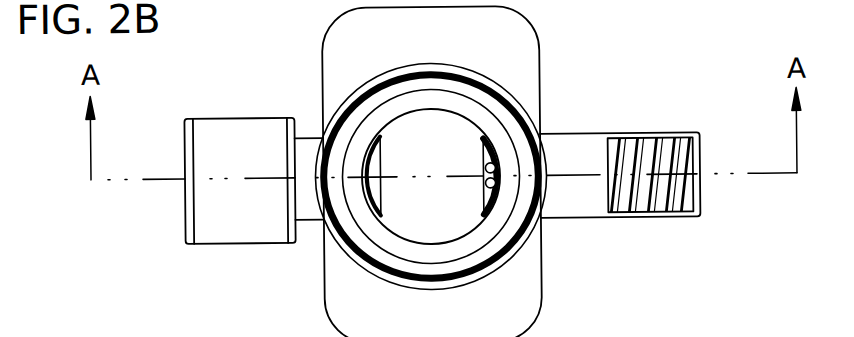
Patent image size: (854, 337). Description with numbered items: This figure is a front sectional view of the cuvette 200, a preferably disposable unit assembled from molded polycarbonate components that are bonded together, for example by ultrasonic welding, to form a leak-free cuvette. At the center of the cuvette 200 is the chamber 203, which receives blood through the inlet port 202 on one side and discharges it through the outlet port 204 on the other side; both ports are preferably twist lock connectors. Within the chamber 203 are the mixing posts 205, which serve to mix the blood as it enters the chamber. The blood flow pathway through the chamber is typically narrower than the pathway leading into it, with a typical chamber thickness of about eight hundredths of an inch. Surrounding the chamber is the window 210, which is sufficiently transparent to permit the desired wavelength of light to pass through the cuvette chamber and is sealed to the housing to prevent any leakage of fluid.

The cuvette 200 is at (549, 63).
The inlet port 202 is at (701, 158).
The chamber 203 is at (395, 148).
The outlet port 204 is at (192, 154).
The mixing posts 205 is at (496, 188).
The window 210 is at (342, 242).